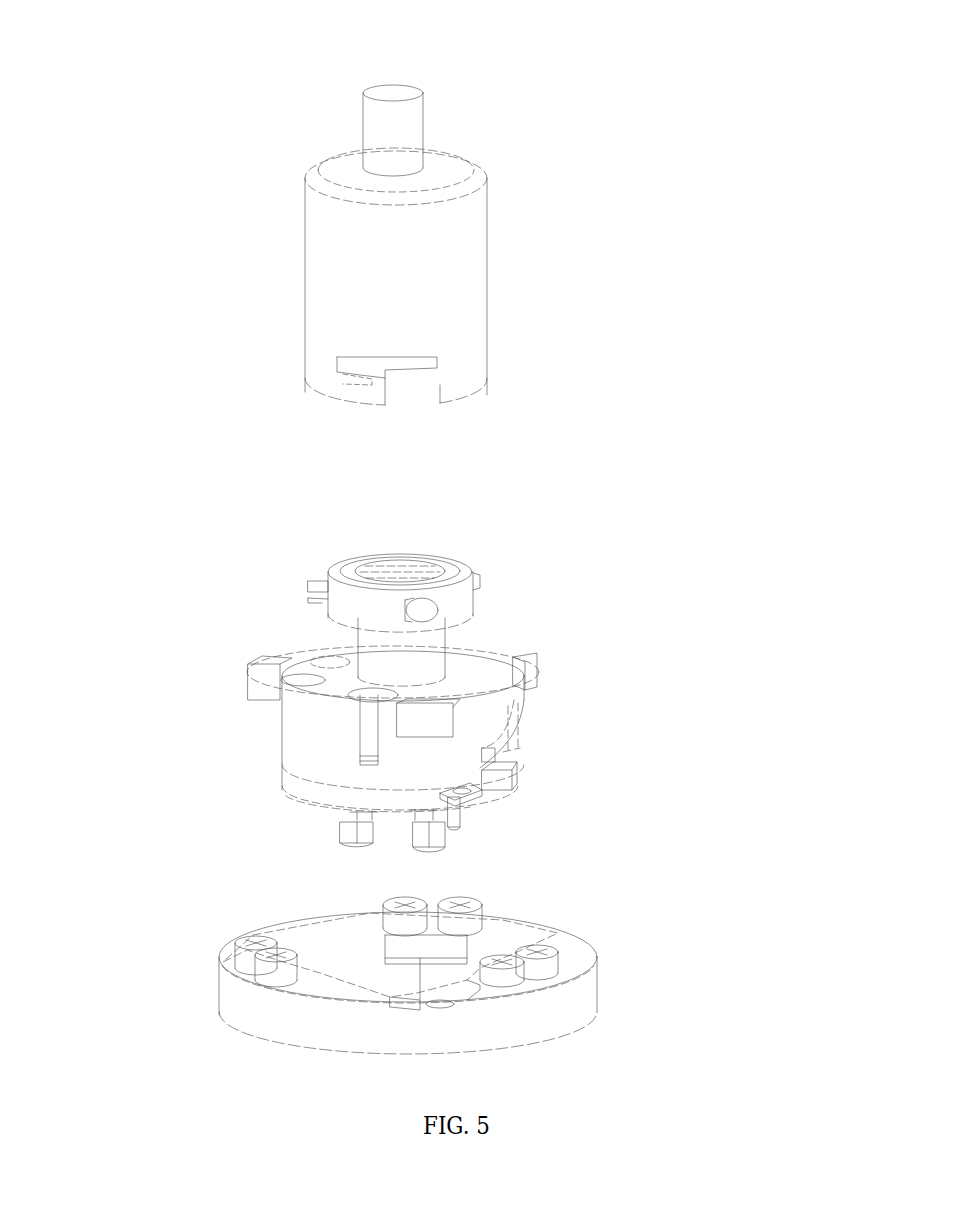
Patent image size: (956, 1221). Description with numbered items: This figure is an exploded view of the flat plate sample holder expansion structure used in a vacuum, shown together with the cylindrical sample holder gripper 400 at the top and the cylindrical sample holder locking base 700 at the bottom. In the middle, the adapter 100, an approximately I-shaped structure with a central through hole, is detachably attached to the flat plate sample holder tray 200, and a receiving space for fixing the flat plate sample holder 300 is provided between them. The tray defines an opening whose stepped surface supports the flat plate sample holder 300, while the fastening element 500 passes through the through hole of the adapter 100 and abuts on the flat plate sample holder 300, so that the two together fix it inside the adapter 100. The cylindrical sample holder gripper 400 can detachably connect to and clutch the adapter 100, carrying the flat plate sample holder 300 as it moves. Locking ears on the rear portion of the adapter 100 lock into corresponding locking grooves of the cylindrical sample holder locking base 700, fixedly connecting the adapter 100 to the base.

The adapter 100 is at (507, 648).
The flat plate sample holder tray 200 is at (322, 797).
The flat plate sample holder 300 is at (512, 760).
The cylindrical sample holder gripper 400 is at (432, 252).
The fastening element 500 is at (403, 575).
The cylindrical sample holder locking base 700 is at (560, 965).